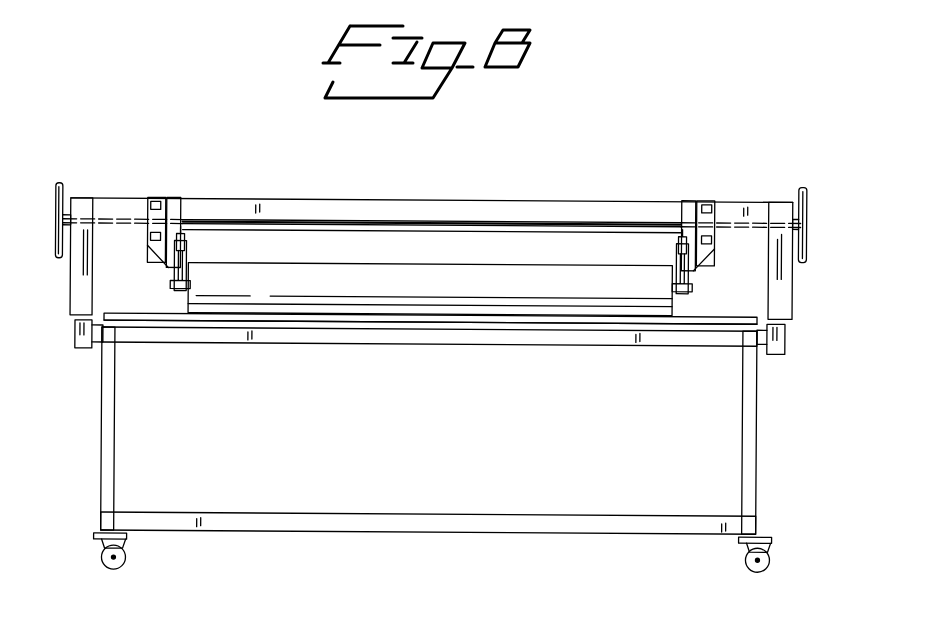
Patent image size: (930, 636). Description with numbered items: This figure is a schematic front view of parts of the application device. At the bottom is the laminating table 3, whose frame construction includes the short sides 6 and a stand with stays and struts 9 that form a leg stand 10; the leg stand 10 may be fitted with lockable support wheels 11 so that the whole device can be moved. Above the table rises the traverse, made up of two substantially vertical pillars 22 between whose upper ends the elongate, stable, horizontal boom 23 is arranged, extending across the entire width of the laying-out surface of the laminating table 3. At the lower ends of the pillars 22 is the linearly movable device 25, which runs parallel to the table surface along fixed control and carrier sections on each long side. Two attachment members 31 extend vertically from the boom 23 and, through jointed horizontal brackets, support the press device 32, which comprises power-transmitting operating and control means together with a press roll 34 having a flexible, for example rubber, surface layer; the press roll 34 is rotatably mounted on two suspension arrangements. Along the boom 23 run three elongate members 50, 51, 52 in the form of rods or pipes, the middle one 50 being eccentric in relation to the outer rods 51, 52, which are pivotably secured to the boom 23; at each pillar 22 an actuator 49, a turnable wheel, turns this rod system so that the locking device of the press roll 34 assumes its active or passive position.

The laminating table 3 is at (290, 347).
The short sides 6 is at (193, 332).
The stays and struts 9 is at (110, 403).
The leg stand 10 is at (762, 411).
The lockable support wheels 11 is at (128, 552).
The vertical pillars 22 is at (777, 281).
The boom 23 is at (228, 199).
The linearly movable device 25 is at (785, 334).
The attachment members 31 is at (152, 248).
The press device 32 is at (668, 254).
The press roll 34 is at (302, 275).
The actuator 49 is at (62, 183).
The middle elongate member 50 is at (385, 221).
The outer elongate member 51 is at (122, 215).
The outer elongate member 52 is at (743, 215).